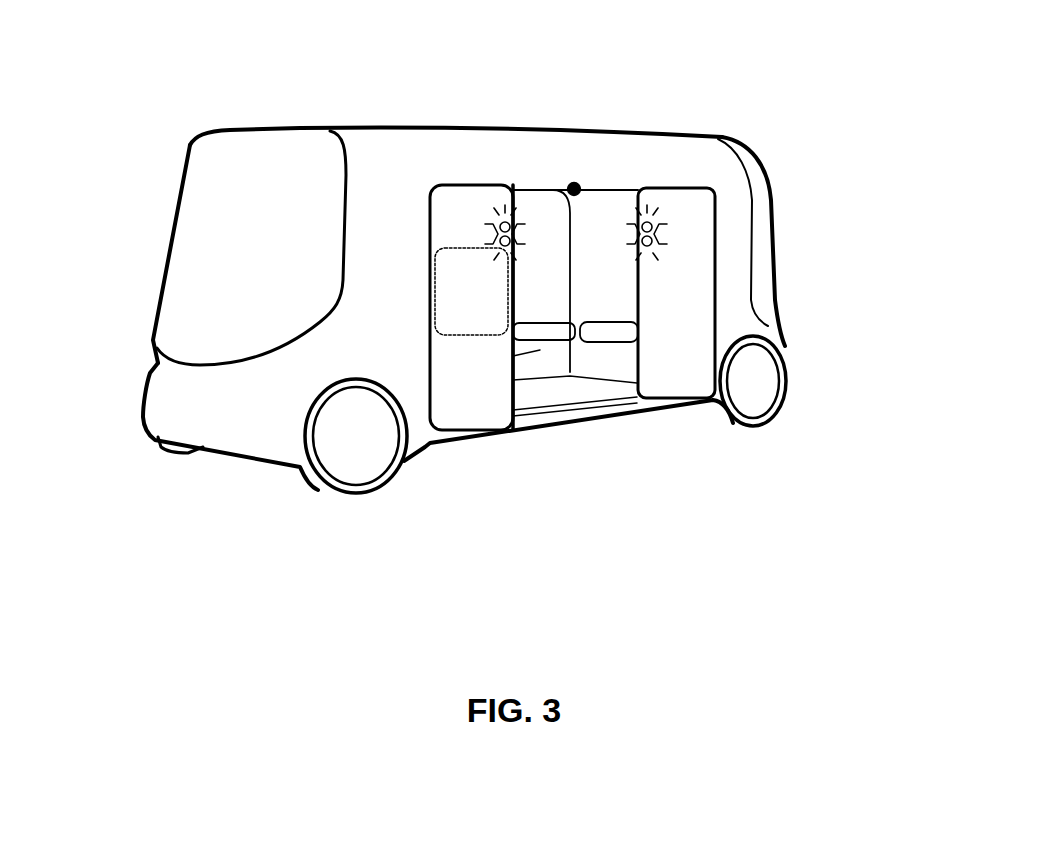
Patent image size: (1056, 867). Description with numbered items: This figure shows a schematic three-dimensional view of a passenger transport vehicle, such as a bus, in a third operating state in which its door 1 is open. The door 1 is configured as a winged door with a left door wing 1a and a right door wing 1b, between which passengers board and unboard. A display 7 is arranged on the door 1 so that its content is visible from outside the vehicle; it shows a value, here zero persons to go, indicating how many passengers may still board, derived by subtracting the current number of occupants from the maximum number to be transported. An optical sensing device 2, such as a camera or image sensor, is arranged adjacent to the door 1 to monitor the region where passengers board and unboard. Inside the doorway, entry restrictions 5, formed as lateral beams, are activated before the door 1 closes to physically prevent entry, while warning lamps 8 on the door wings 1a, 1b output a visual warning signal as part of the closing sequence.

The door 1 is at (694, 218).
The left door wing 1a is at (473, 416).
The right door wing 1b is at (710, 243).
The optical sensing device 2 is at (577, 178).
The entry restriction 5 is at (540, 347).
The display 7 is at (446, 258).
The warning lamps 8 is at (533, 241).